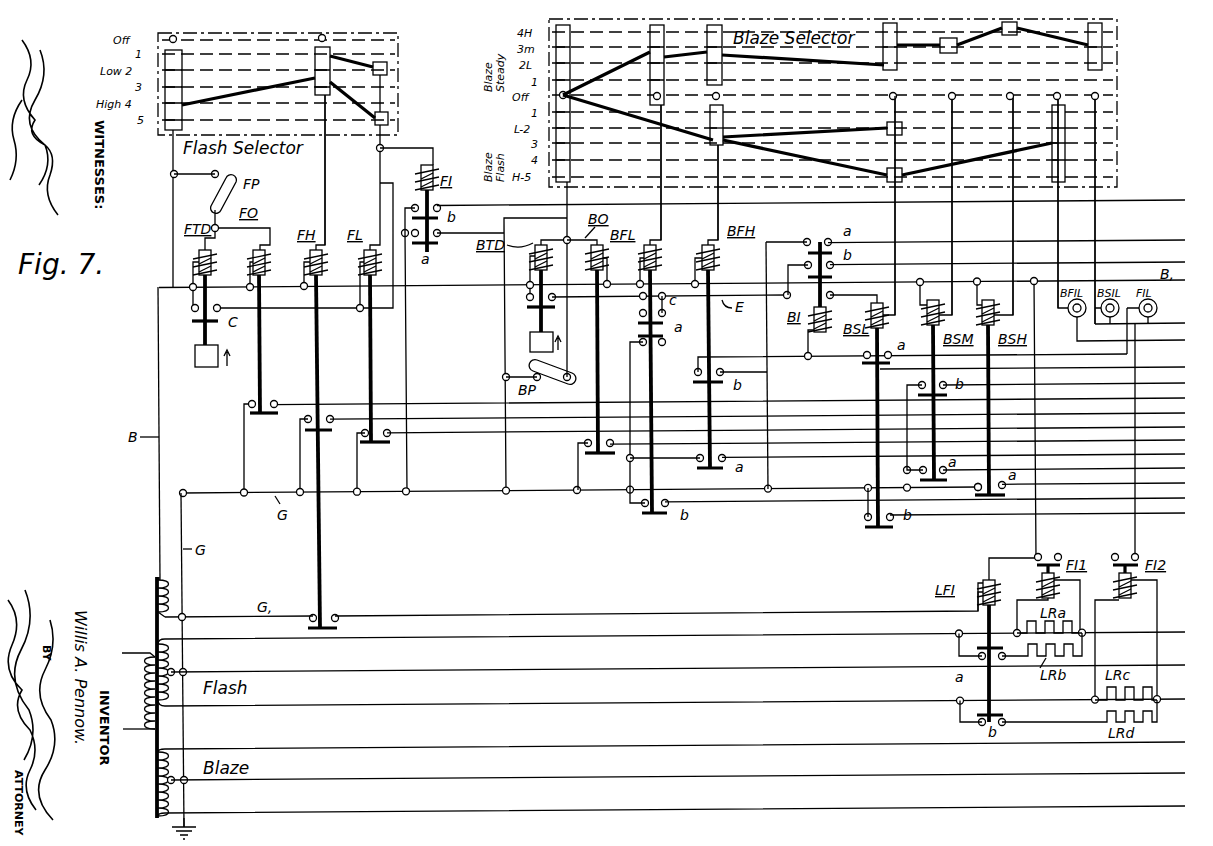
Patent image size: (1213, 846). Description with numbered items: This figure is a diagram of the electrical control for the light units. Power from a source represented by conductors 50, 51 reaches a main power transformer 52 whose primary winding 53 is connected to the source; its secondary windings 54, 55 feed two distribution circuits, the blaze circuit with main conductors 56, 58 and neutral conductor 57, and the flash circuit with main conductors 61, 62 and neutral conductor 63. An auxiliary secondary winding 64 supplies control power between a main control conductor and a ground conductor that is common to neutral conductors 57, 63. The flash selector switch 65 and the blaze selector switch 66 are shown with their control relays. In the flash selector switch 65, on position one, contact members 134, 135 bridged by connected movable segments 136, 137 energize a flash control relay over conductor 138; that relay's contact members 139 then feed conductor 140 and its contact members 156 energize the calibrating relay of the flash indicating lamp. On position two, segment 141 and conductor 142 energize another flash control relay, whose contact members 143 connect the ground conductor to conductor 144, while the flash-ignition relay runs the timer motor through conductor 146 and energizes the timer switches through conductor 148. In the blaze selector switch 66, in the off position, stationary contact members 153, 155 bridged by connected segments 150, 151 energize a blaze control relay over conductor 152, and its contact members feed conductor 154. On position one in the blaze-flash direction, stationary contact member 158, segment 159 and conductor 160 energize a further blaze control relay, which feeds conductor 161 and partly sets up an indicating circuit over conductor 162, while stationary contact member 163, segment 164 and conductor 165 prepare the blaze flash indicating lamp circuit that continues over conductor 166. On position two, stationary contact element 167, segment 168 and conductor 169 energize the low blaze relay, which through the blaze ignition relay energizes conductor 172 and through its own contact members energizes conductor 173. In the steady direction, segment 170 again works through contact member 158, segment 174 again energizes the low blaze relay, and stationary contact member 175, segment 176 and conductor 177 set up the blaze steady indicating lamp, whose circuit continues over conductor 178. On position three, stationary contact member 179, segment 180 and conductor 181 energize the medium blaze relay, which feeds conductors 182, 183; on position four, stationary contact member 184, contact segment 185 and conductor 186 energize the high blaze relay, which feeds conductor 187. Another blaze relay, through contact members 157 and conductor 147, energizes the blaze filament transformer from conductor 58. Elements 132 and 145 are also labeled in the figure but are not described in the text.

The conductor 50 is at (137, 645).
The conductor 51 is at (137, 740).
The main power transformer 52 is at (139, 598).
The primary winding 53 is at (140, 690).
The secondary winding 54 is at (168, 750).
The secondary winding 55 is at (170, 661).
The main conductor 56 is at (671, 738).
The neutral conductor 57 is at (678, 768).
The main conductor 58 is at (671, 803).
The main conductor 61 is at (671, 630).
The main conductor 62 is at (671, 694).
The neutral conductor 63 is at (678, 661).
The auxiliary secondary winding 64 is at (170, 590).
The flash selector switch 65 is at (294, 84).
The blaze selector switch 66 is at (850, 103).
The conductor 132 is at (291, 400).
The contact member 134 is at (177, 41).
The contact member 135 is at (326, 42).
The movable segment 136 is at (182, 61).
The movable segment 137 is at (315, 62).
The conductor 138 is at (325, 185).
The contact members 139 is at (322, 435).
The conductor 140 is at (757, 409).
The segment 141 is at (387, 66).
The conductor 142 is at (405, 172).
The contact members 143 is at (390, 440).
The conductor 144 is at (786, 423).
The selector contact 145 is at (388, 118).
The conductor 146 is at (1006, 234).
The conductor 147 is at (897, 435).
The conductor 148 is at (811, 196).
The segment 150 is at (570, 40).
The segment 151 is at (664, 70).
The conductor 152 is at (660, 248).
The stationary contact member 153 is at (570, 91).
The conductor 154 is at (925, 493).
The stationary contact member 155 is at (661, 93).
The contact members 156 is at (340, 612).
The contact members 157 is at (598, 458).
The stationary contact member 158 is at (720, 93).
The segment 159 is at (723, 118).
The conductor 160 is at (718, 197).
The conductor 161 is at (953, 448).
The conductor 162 is at (1032, 361).
The stationary contact member 163 is at (1060, 92).
The segment 164 is at (1052, 118).
The conductor 165 is at (1058, 230).
The conductor 166 is at (1131, 329).
The stationary contact element 167 is at (896, 92).
The segment 168 is at (902, 125).
The conductor 169 is at (902, 182).
The segment 170 is at (722, 70).
The conductor 172 is at (1007, 256).
The conductor 173 is at (1037, 507).
The segment 174 is at (883, 65).
The stationary contact member 175 is at (1098, 96).
The segment 176 is at (1102, 48).
The conductor 177 is at (1095, 230).
The conductor 178 is at (1142, 318).
The stationary contact member 179 is at (955, 92).
The segment 180 is at (948, 53).
The conductor 181 is at (952, 225).
The conductor 182 is at (1064, 462).
The conductor 183 is at (1064, 377).
The stationary contact member 184 is at (1013, 92).
The contact segment 185 is at (1008, 35).
The conductor 186 is at (1013, 230).
The conductor 187 is at (1093, 477).